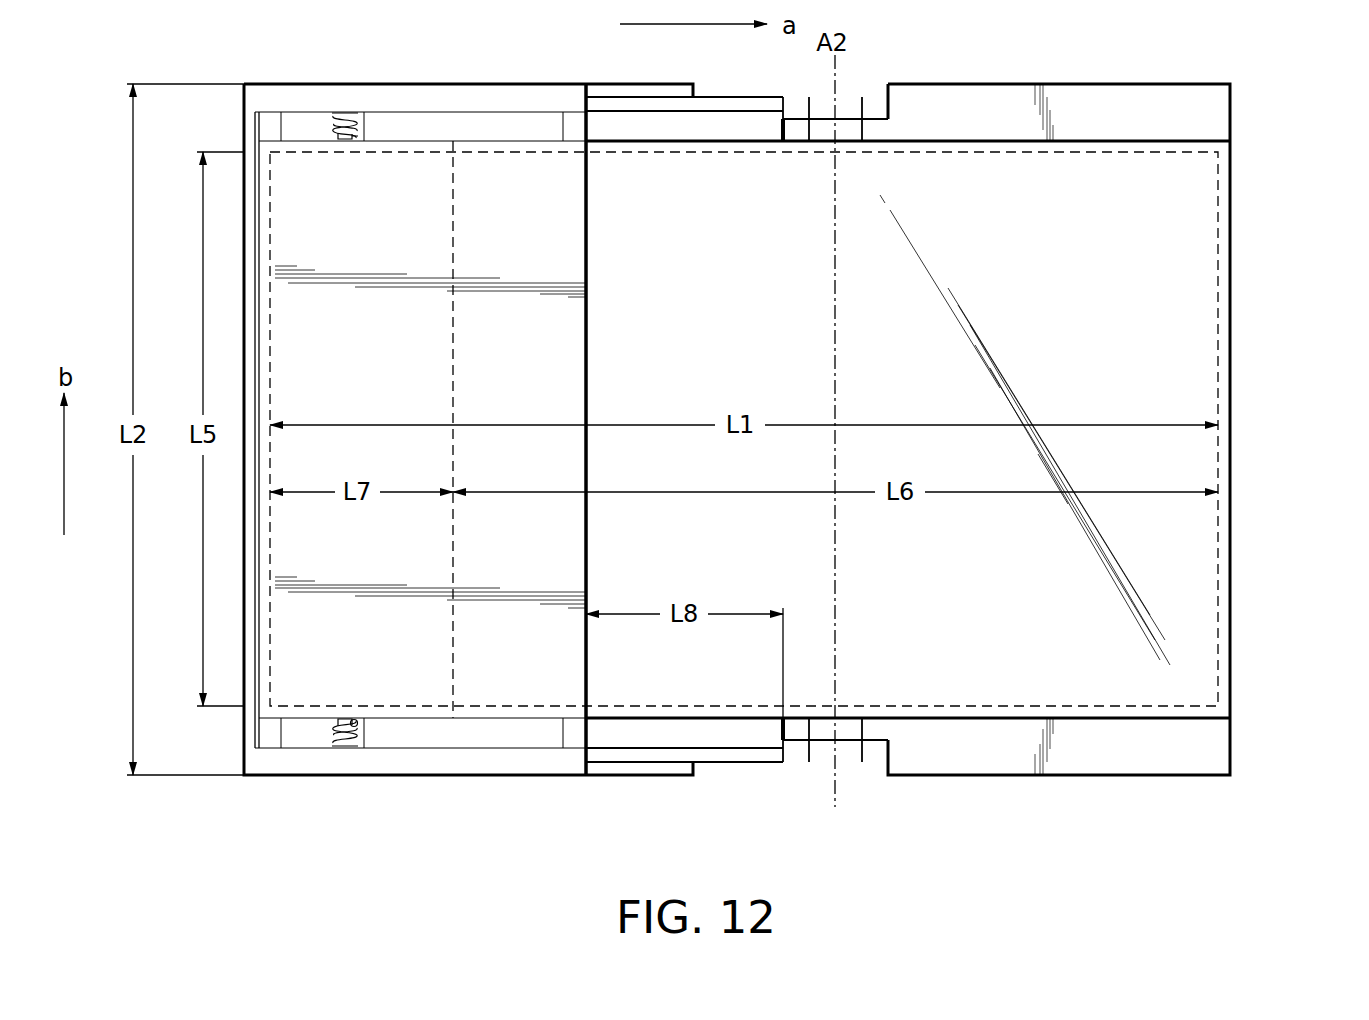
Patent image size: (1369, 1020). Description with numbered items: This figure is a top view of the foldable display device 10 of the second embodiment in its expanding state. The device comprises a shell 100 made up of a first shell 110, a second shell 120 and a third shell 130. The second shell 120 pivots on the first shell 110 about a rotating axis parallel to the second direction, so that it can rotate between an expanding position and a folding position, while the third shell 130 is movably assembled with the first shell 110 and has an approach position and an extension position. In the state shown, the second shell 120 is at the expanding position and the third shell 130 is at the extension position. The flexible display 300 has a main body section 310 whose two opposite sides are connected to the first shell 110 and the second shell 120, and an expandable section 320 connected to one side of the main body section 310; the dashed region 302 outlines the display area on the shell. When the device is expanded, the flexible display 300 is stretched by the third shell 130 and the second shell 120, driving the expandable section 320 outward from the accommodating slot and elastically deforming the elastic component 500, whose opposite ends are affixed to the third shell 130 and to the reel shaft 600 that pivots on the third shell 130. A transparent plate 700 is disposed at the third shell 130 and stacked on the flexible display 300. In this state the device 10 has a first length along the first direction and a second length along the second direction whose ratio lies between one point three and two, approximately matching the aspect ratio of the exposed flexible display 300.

The foldable display device 10 is at (1346, 63).
The shell 100 is at (707, 481).
The first shell 110 is at (715, 737).
The second shell 120 is at (927, 456).
The third shell 130 is at (440, 765).
The flexible display 300 is at (1233, 347).
The display region 302 is at (1010, 152).
The main body section 310 is at (1030, 362).
The expandable section 320 is at (325, 240).
The elastic component 500 is at (360, 122).
The reel shaft 600 is at (343, 723).
The transparent plate 700 is at (528, 100).